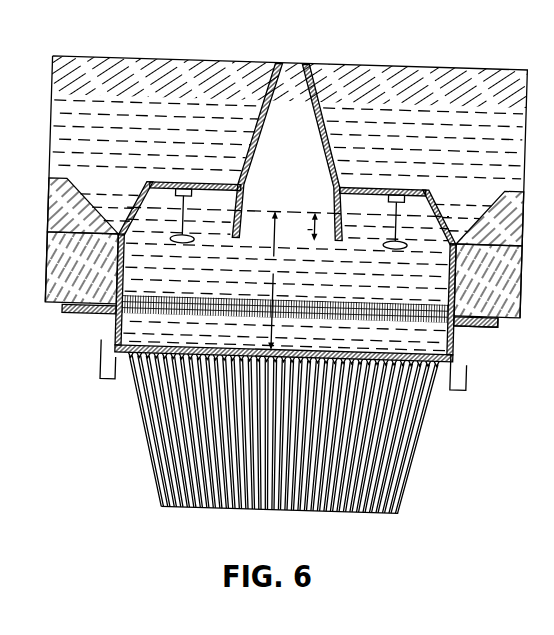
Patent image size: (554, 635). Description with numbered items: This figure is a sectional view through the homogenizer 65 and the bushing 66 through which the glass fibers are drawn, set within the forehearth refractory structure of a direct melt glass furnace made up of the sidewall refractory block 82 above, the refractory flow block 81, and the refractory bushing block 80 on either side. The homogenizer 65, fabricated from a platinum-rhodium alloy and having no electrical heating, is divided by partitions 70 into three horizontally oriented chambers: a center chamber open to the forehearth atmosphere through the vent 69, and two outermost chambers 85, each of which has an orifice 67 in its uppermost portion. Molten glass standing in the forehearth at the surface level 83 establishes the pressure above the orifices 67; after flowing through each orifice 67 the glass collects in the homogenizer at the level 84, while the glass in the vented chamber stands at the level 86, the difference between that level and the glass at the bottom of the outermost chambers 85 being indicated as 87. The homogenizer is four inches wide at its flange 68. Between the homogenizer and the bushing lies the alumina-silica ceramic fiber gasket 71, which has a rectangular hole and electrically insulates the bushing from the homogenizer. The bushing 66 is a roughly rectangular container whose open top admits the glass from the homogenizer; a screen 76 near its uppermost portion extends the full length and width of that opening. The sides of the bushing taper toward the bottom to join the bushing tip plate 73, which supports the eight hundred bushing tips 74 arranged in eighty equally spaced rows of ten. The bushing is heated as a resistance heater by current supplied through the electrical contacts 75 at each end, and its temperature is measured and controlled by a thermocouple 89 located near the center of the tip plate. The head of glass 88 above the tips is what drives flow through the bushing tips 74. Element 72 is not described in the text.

The homogenizer 65 is at (443, 217).
The bushing 66 is at (116, 336).
The orifice 67 is at (187, 186).
The flange 68 is at (500, 321).
The vent 69 is at (290, 67).
The partition 70 is at (239, 209).
The ceramic fiber gasket 71 is at (66, 319).
The support plate 72 is at (485, 323).
The bushing tip plate 73 is at (441, 362).
The bushing tips 74 is at (133, 362).
The electrical contacts 75 is at (106, 380).
The screen 76 is at (396, 317).
The refractory bushing block 80 is at (60, 278).
The refractory flow block 81 is at (62, 227).
The sidewall refractory block 82 is at (405, 67).
The surface level of molten glass in the forehearth 83 is at (437, 100).
The surface level of molten glass in the homogenizer 84 is at (171, 241).
The outermost chambers 85 is at (203, 235).
The surface level of molten glass in the vented chamber 86 is at (273, 213).
The level difference 87 is at (302, 226).
The head of glass 88 is at (278, 280).
The thermocouple 89 is at (300, 356).